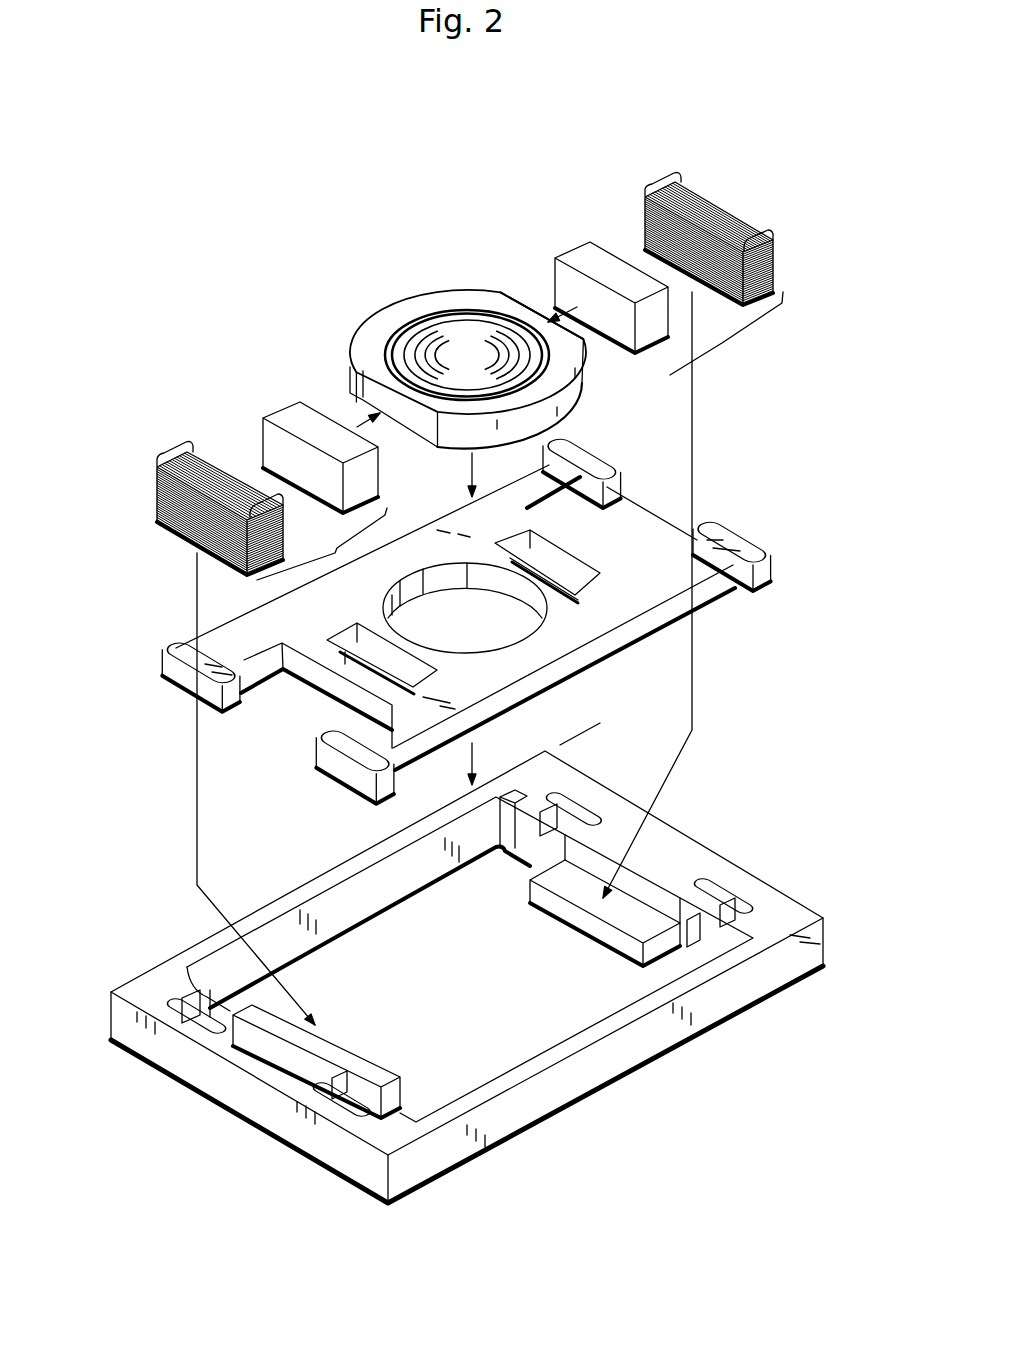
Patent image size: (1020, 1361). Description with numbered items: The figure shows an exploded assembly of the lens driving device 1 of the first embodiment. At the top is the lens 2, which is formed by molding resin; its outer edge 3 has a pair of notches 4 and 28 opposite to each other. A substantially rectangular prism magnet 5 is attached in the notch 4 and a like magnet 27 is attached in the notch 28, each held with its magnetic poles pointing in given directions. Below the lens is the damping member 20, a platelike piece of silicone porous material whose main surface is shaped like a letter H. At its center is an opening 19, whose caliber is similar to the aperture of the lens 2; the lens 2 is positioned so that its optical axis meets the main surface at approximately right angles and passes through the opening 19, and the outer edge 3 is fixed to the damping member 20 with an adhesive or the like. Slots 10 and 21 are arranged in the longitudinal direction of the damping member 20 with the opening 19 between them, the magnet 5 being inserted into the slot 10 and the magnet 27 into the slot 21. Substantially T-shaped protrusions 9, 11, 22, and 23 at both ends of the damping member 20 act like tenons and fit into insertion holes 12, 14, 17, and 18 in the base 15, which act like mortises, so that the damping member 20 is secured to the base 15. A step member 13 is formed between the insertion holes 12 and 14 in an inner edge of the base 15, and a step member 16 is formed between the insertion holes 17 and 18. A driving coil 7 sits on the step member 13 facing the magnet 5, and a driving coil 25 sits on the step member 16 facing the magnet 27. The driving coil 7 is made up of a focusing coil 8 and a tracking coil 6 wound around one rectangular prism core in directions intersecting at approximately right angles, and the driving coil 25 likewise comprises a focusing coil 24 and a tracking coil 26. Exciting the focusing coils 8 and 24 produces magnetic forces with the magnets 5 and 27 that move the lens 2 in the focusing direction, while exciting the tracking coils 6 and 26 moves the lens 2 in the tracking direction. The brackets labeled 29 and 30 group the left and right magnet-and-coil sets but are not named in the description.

The lens driving device 1 is at (450, 183).
The lens 2 is at (455, 355).
The outer edge 3 is at (373, 330).
The notch 4 is at (367, 403).
The magnet 5 is at (297, 413).
The tracking coil 6 is at (200, 462).
The driving coil 7 is at (140, 498).
The focusing coil 8 is at (187, 520).
The protrusion 9 is at (200, 682).
The slot 10 is at (373, 660).
The protrusion 11 is at (347, 753).
The insertion hole 12 is at (203, 1022).
The step member 13 is at (317, 1042).
The insertion hole 14 is at (350, 1107).
The base 15 is at (560, 1088).
The step member 16 is at (642, 927).
The insertion hole 17 is at (727, 895).
The insertion hole 18 is at (587, 808).
The opening 19 is at (575, 650).
The damping member 20 is at (647, 642).
The slot 21 is at (508, 628).
The protrusion 22 is at (733, 540).
The protrusion 23 is at (587, 462).
The focusing coil 24 is at (758, 270).
The driving coil 25 is at (740, 200).
The tracking coil 26 is at (677, 197).
The magnet 27 is at (590, 257).
The notch 28 is at (525, 303).
The first driving assembly 29 is at (322, 544).
The second driving assembly 30 is at (726, 336).